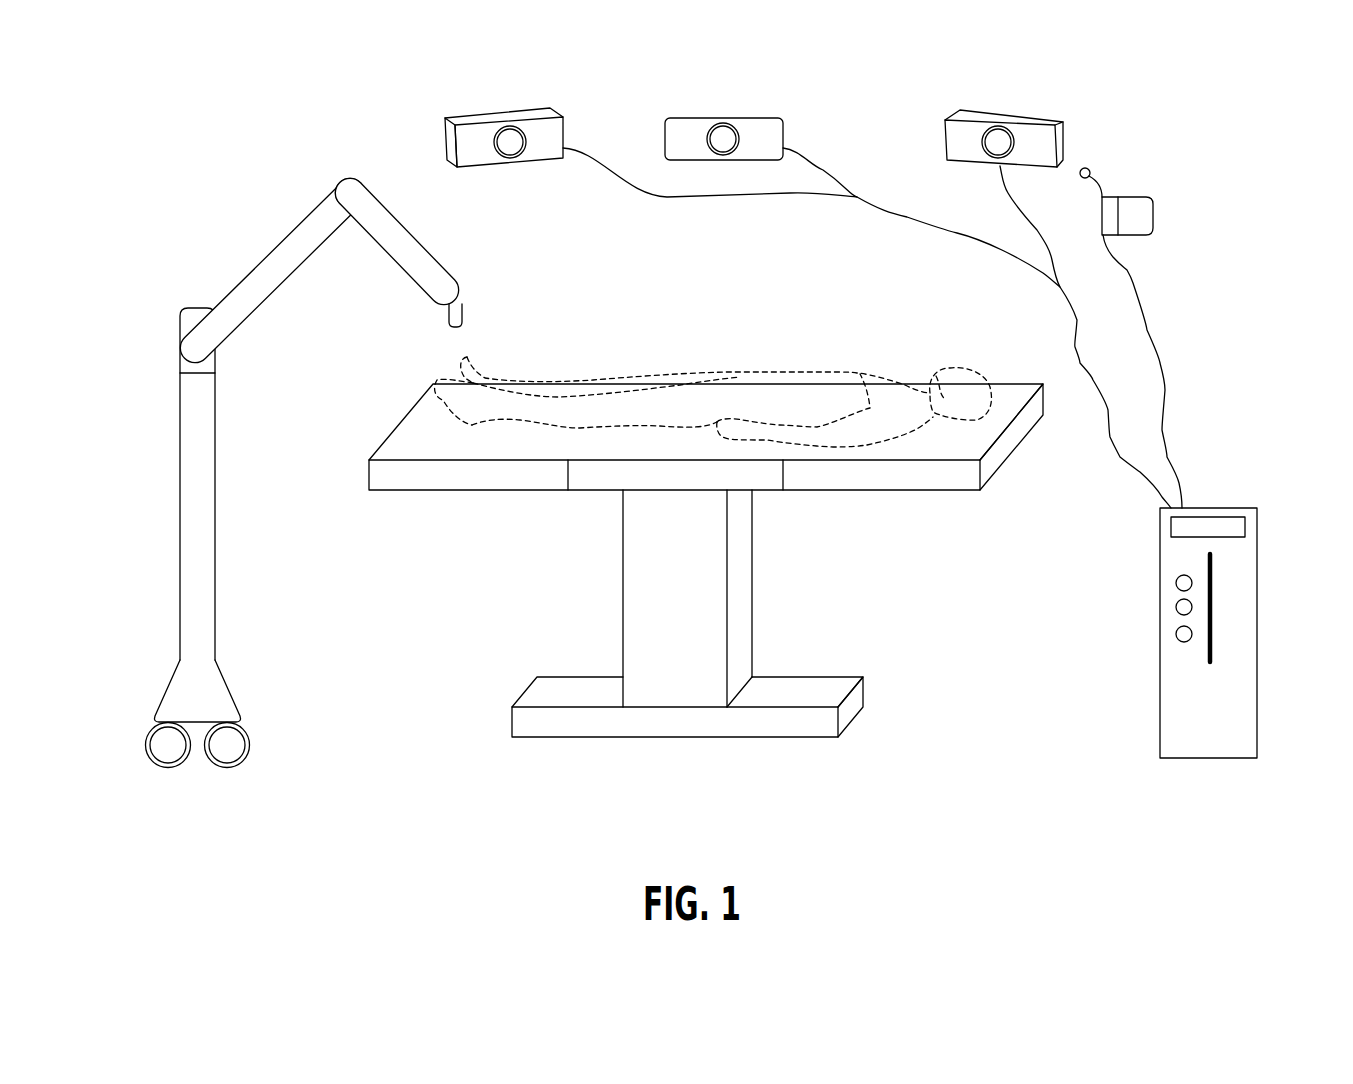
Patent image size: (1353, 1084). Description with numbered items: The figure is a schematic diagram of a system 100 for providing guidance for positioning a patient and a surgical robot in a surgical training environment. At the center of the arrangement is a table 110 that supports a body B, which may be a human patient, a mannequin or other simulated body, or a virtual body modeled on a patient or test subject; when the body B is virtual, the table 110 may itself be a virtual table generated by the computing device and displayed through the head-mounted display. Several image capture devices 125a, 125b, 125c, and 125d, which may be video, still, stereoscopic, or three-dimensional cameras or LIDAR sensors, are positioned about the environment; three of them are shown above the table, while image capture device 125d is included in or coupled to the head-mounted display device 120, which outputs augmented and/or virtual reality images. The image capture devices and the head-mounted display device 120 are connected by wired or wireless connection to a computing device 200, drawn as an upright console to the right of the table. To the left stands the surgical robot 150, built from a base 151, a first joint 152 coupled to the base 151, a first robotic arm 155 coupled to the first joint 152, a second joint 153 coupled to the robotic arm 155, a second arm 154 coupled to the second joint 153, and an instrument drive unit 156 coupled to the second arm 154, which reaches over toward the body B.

The system 100 is at (391, 806).
The table 110 is at (833, 490).
The head-mounted display device 120 is at (1148, 196).
The image capture device 125a is at (497, 115).
The image capture device 125b is at (687, 117).
The image capture device 125c is at (1020, 113).
The image capture device 125d is at (1087, 170).
The surgical robot 150 is at (319, 453).
The base 151 is at (180, 577).
The first joint 152 is at (180, 348).
The second joint 153 is at (345, 175).
The second arm 154 is at (422, 237).
The robotic arm 155 is at (287, 233).
The instrument drive unit 156 is at (463, 313).
The computing device 200 is at (1232, 506).
The body B is at (828, 372).